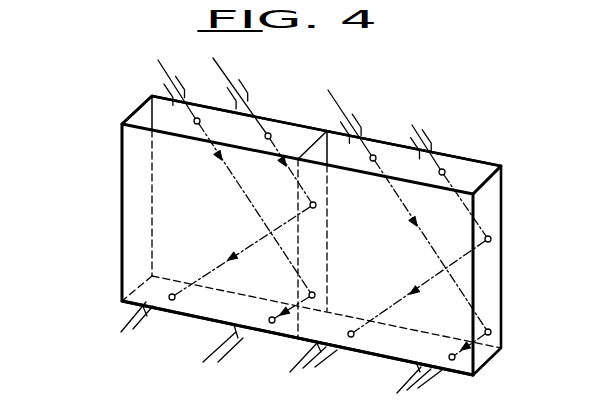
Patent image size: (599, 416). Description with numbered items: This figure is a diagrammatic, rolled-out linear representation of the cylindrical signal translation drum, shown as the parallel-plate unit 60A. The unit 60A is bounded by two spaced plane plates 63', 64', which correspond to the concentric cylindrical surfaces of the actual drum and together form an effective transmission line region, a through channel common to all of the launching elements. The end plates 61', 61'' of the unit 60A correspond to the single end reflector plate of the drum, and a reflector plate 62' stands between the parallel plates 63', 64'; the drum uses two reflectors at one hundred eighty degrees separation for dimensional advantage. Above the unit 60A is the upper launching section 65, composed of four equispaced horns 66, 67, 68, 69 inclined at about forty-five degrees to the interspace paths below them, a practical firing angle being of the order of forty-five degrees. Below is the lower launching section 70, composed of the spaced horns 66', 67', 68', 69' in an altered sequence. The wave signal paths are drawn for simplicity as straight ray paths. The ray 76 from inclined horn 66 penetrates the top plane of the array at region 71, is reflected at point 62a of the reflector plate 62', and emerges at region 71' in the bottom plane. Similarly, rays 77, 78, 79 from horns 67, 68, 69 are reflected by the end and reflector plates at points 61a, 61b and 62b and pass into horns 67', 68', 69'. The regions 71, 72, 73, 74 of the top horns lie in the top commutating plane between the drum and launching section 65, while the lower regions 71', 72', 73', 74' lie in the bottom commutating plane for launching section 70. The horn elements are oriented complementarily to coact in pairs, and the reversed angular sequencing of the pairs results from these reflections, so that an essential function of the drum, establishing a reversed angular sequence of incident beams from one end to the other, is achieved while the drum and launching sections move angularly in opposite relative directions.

The unit 60A is at (304, 245).
The end plate 61' is at (123, 195).
The end plate 61'' is at (513, 270).
The reflection point 61a is at (493, 331).
The reflection point 61b is at (492, 240).
The reflector plate 62' is at (335, 235).
The reflection point 62a is at (318, 293).
The reflection point 62b is at (316, 208).
The plane plate 63' is at (297, 249).
The plane plate 64' is at (320, 145).
The upper launching section 65 is at (308, 100).
The horn 66 is at (186, 80).
The horn 67 is at (253, 87).
The horn 68 is at (366, 121).
The horn 69 is at (436, 138).
The horn 66' is at (233, 352).
The horn 67' is at (150, 329).
The horn 68' is at (431, 385).
The horn 69' is at (322, 366).
The lower launching section 70 is at (296, 410).
The region 71 is at (184, 124).
The region 72 is at (249, 137).
The region 73 is at (357, 160).
The region 74 is at (421, 173).
The region 71' is at (256, 318).
The region 72' is at (195, 301).
The region 73' is at (434, 351).
The region 74' is at (372, 342).
The ray 76 is at (243, 195).
The ray 77 is at (283, 168).
The ray 78 is at (400, 200).
The ray 79 is at (462, 210).